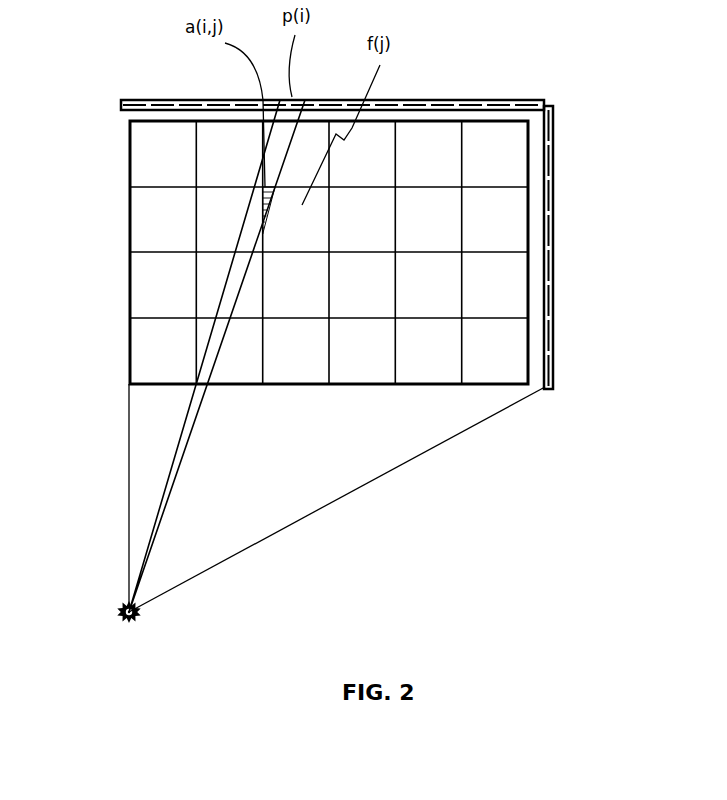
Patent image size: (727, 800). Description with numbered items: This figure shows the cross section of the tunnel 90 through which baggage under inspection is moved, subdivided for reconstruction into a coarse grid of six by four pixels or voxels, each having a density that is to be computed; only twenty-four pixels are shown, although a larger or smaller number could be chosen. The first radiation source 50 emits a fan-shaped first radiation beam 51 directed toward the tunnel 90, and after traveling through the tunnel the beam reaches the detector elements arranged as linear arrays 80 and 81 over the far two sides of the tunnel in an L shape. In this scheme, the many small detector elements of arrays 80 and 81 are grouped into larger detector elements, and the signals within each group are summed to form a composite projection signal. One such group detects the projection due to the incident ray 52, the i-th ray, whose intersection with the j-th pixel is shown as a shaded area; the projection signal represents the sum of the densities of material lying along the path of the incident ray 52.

The first radiation source 50 is at (110, 602).
The first radiation beam 51 is at (225, 532).
The incident ray 52 is at (177, 462).
The first set of detector elements 80 is at (475, 92).
The first set of detector elements 81 is at (558, 235).
The tunnel 90 is at (340, 392).